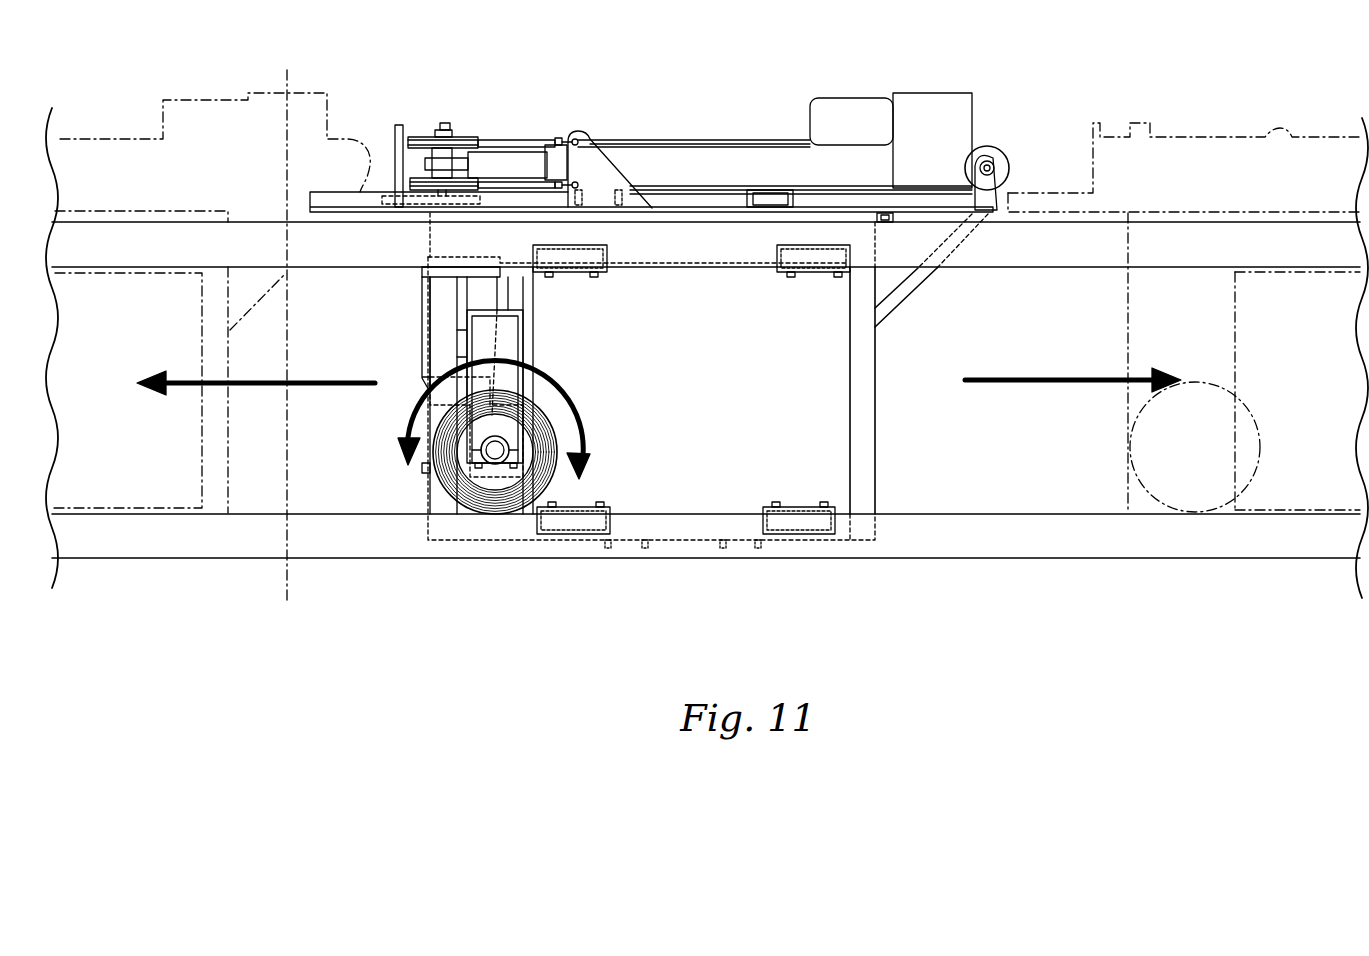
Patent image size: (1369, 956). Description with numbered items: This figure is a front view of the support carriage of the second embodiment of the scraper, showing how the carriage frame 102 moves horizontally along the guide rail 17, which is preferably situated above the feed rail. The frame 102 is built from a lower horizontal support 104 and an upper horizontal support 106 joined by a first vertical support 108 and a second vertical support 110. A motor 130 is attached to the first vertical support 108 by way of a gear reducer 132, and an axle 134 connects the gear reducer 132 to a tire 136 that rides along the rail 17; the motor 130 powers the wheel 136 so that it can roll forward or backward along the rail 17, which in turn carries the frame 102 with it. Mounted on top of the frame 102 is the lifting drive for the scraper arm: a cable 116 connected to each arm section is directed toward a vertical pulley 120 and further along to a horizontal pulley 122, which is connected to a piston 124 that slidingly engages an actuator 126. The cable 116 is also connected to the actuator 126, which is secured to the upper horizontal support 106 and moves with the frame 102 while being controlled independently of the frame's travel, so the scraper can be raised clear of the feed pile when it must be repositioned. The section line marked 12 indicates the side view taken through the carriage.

The section line of Fig. 12 is at (318, 600).
The guide rail 17 is at (1000, 542).
The carriage frame 102 is at (863, 485).
The lower horizontal support 104 is at (688, 532).
The upper horizontal support 106 is at (667, 247).
The first vertical support 108 is at (442, 338).
The second vertical support 110 is at (863, 422).
The cable 116 is at (517, 183).
The vertical pulley 120 is at (1015, 157).
The horizontal pulley 122 is at (425, 135).
The piston 124 is at (492, 160).
The actuator 126 is at (728, 158).
The motor 130 is at (425, 287).
The gear reducer 132 is at (435, 413).
The axle 134 is at (495, 456).
The tire 136 is at (447, 467).